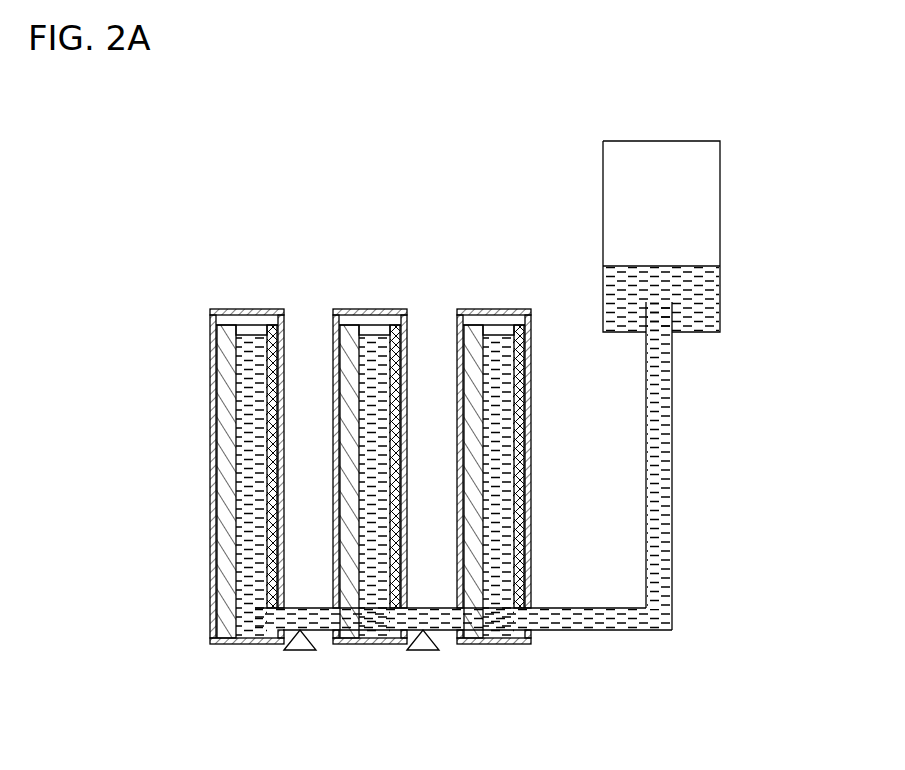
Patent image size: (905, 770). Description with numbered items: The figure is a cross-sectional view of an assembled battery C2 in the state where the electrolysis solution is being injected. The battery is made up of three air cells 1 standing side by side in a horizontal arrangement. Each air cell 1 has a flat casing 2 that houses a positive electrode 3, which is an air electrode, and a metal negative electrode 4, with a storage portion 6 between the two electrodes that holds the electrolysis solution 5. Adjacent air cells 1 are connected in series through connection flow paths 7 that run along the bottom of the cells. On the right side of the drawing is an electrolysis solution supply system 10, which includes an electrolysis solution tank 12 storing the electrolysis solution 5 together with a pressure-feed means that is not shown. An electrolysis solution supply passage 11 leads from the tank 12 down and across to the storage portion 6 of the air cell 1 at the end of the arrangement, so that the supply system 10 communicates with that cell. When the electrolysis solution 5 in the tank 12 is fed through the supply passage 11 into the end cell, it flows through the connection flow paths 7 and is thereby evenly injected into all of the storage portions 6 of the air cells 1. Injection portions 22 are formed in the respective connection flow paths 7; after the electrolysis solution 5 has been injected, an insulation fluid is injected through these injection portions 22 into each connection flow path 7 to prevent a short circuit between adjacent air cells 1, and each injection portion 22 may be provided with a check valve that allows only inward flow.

The assembled battery C2 is at (541, 211).
The air cell 1 is at (258, 299).
The casing 2 is at (210, 368).
The positive electrode 3 is at (270, 425).
The metal negative electrode 4 is at (220, 487).
The electrolysis solution 5 is at (247, 558).
The storage portion 6 is at (251, 322).
The connection flow path 7 is at (310, 606).
The electrolysis solution supply system 10 is at (697, 338).
The electrolysis solution supply passage 11 is at (670, 478).
The electrolysis solution tank 12 is at (720, 200).
The injection portion 22 is at (300, 650).